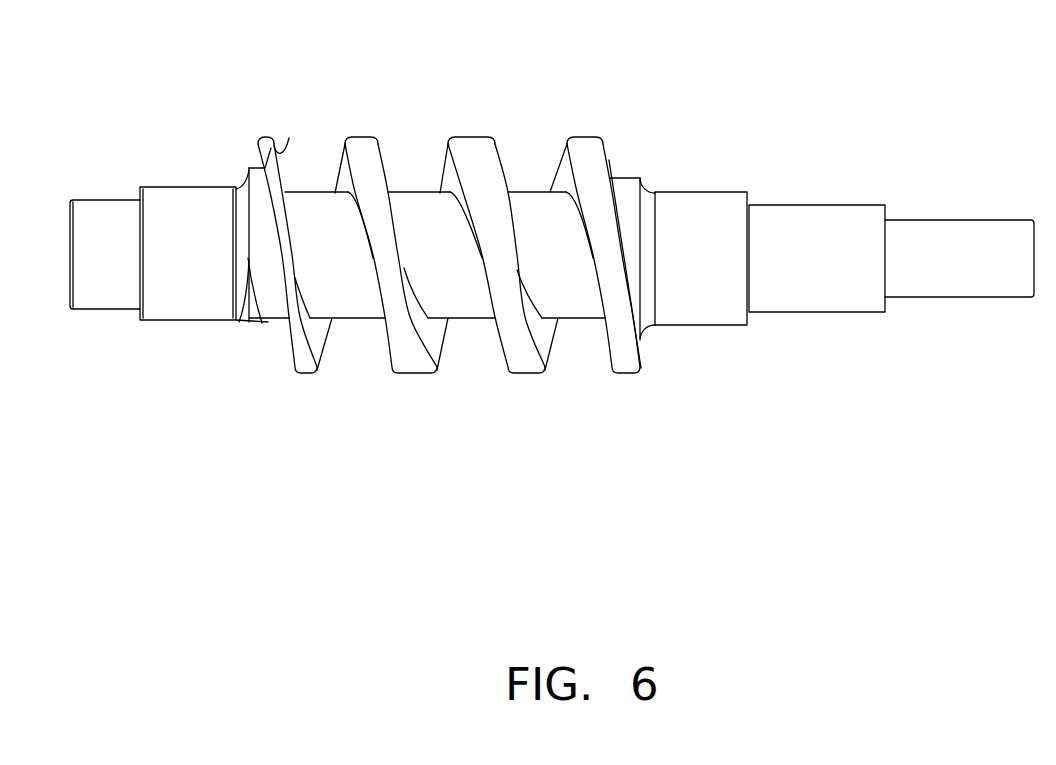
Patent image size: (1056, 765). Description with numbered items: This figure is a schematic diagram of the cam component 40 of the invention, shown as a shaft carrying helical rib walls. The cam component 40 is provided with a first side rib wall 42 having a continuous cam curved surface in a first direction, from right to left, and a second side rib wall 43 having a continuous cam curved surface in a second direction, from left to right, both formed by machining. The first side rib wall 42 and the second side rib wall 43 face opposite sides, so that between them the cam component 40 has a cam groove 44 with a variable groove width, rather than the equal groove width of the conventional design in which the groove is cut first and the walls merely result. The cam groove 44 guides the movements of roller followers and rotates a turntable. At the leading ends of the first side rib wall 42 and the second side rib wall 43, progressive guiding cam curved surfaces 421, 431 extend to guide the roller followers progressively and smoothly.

The cam component 40 is at (552, 229).
The first side rib wall 42 is at (285, 147).
The second side rib wall 43 is at (348, 165).
The cam groove 44 is at (300, 131).
The progressive guiding cam curved surface 421 is at (641, 335).
The progressive guiding cam curved surface 431 is at (257, 162).